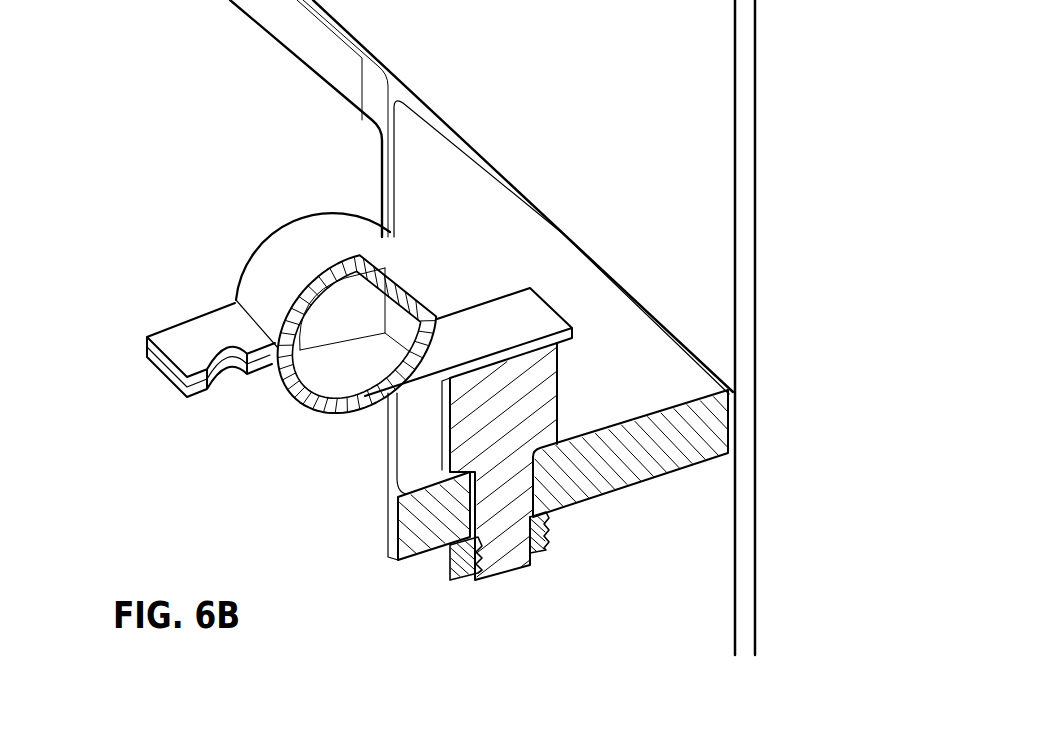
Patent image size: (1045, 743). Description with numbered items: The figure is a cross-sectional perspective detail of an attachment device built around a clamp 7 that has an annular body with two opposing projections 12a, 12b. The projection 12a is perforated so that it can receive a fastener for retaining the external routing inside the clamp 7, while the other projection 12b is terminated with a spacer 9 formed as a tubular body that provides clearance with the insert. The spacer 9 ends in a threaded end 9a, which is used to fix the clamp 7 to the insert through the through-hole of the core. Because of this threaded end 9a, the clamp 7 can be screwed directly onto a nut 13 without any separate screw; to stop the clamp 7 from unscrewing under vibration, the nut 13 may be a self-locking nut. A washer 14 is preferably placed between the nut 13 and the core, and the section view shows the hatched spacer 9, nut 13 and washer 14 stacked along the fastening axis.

The clamp 7 is at (340, 230).
The spacer 9 is at (537, 393).
The threaded end 9a is at (525, 495).
The projection 12a is at (163, 342).
The projection 12b is at (510, 320).
The nut 13 is at (547, 534).
The washer 14 is at (540, 518).